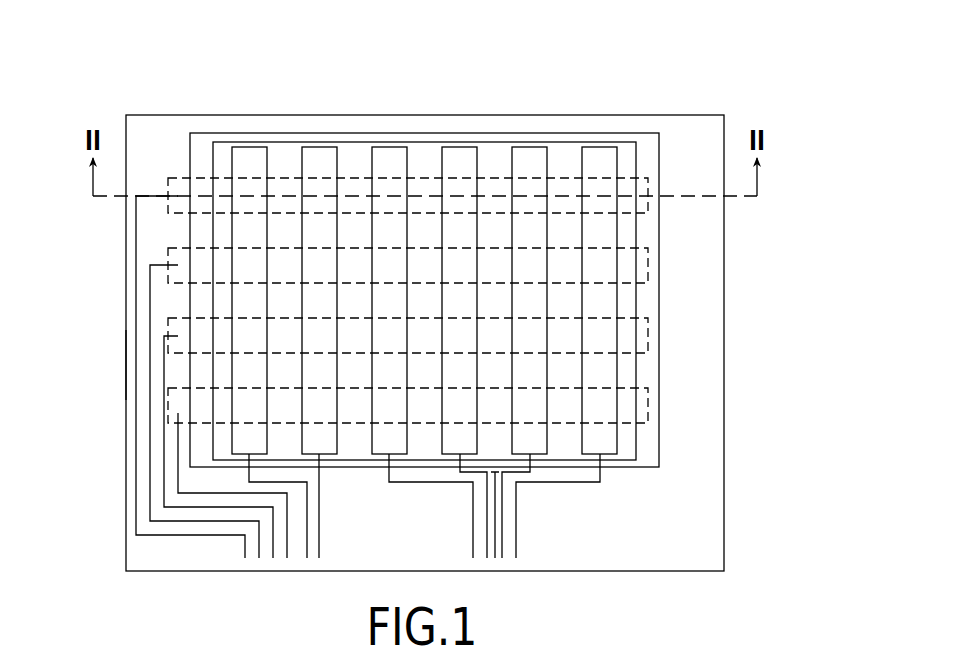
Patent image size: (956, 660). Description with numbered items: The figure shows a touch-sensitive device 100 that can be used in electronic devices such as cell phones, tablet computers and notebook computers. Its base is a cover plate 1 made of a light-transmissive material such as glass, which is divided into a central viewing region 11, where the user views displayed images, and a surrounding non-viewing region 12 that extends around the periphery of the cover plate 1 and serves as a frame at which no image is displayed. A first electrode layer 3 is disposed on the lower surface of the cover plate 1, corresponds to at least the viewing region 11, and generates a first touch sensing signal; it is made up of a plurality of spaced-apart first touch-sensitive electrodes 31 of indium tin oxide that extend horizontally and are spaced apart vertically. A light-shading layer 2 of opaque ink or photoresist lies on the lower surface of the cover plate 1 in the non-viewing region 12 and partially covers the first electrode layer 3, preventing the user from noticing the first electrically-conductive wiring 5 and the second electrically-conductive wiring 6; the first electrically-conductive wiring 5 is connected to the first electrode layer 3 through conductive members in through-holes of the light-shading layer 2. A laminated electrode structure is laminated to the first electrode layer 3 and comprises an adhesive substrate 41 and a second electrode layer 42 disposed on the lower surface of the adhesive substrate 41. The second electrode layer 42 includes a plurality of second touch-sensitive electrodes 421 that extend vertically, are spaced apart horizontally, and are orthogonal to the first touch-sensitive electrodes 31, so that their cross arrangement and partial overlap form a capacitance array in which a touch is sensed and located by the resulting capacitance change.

The touch-sensitive device 100 is at (99, 38).
The cover plate 1 is at (120, 289).
The light-shading layer 2 is at (130, 369).
The first electrode layer 3 is at (778, 240).
The first electrically-conductive wiring 5 is at (128, 498).
The second electrically-conductive wiring 6 is at (333, 497).
The viewing region 11 is at (648, 435).
The non-viewing region 12 is at (670, 128).
The first touch-sensitive electrodes 31 is at (649, 263).
The adhesive substrate 41 is at (632, 448).
The second electrode layer 42 is at (257, 52).
The second touch-sensitive electrodes 421 is at (318, 157).